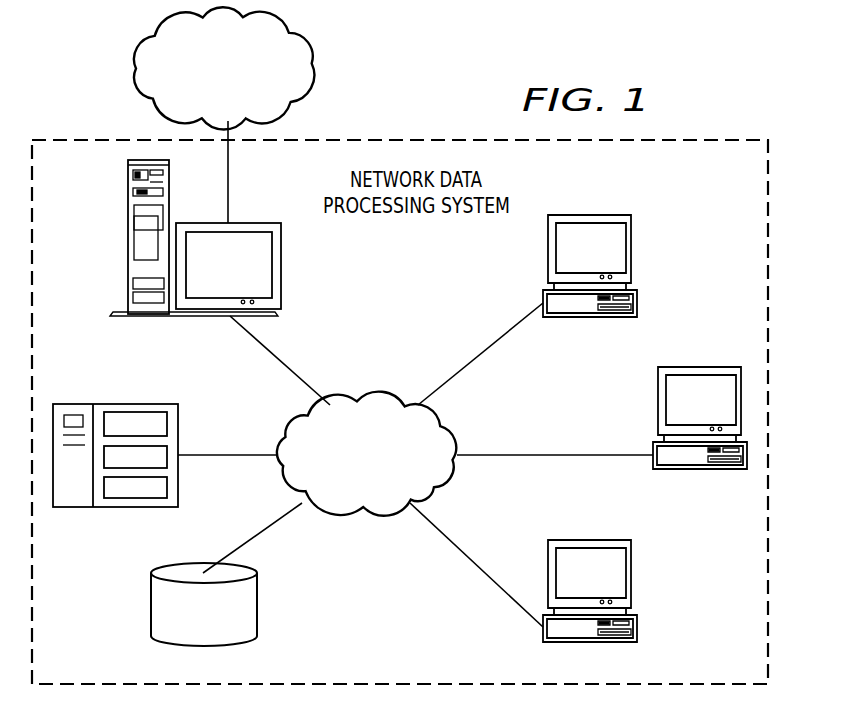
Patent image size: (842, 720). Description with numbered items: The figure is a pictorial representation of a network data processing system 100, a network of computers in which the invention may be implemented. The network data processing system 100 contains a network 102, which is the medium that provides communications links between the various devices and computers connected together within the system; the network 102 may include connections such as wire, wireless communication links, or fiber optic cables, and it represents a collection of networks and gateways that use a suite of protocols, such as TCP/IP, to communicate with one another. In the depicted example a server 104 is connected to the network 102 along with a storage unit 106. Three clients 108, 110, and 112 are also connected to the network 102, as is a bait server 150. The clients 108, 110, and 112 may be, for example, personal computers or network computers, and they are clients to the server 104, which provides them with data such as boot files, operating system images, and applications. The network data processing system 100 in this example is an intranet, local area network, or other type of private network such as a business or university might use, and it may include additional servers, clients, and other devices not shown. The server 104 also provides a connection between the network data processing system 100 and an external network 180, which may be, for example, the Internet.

The network data processing system 100 is at (410, 140).
The network 102 is at (388, 482).
The server 104 is at (128, 228).
The storage unit 106 is at (151, 606).
The client 108 is at (632, 258).
The client 110 is at (698, 367).
The client 112 is at (632, 580).
The bait server 150 is at (115, 404).
The external network 180 is at (243, 98).